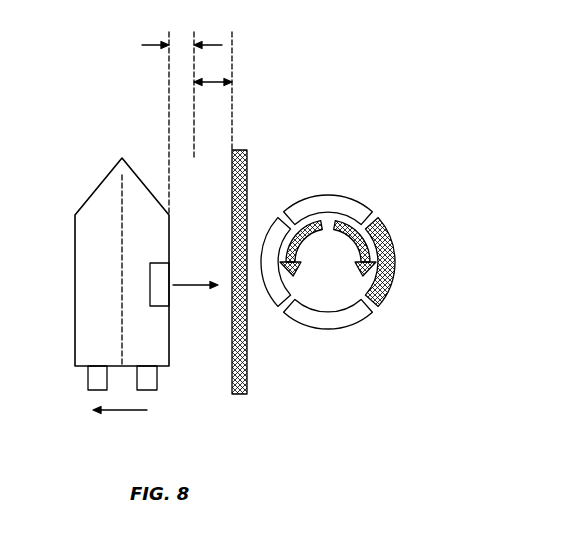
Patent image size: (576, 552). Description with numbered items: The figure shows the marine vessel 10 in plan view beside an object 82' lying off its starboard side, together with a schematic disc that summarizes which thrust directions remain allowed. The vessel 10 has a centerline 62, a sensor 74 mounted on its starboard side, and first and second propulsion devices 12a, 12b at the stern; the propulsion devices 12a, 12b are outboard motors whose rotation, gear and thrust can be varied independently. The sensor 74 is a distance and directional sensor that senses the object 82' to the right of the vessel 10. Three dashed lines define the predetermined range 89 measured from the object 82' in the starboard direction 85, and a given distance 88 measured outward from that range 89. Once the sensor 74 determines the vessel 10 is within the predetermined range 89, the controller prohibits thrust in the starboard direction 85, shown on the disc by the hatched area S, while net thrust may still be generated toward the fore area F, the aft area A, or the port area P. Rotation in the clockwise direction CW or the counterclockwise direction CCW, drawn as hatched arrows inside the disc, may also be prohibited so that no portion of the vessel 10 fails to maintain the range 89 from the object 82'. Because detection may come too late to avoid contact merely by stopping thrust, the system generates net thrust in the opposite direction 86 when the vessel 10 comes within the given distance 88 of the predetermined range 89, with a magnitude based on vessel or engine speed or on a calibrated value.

The marine vessel 10 is at (83, 243).
The centerline 62 is at (121, 313).
The sensor 74 is at (155, 263).
The first propulsion device 12a is at (86, 378).
The second propulsion device 12b is at (159, 377).
The starboard direction 85 is at (199, 287).
The opposite direction 86 is at (127, 411).
The given distance 88 is at (157, 46).
The predetermined range 89 is at (213, 84).
The object 82' is at (262, 268).
The fore area F is at (328, 204).
The starboard area S is at (391, 283).
The aft area A is at (329, 323).
The port area P is at (275, 288).
The counterclockwise rotation arrow CCW is at (304, 250).
The clockwise rotation arrow CW is at (371, 253).